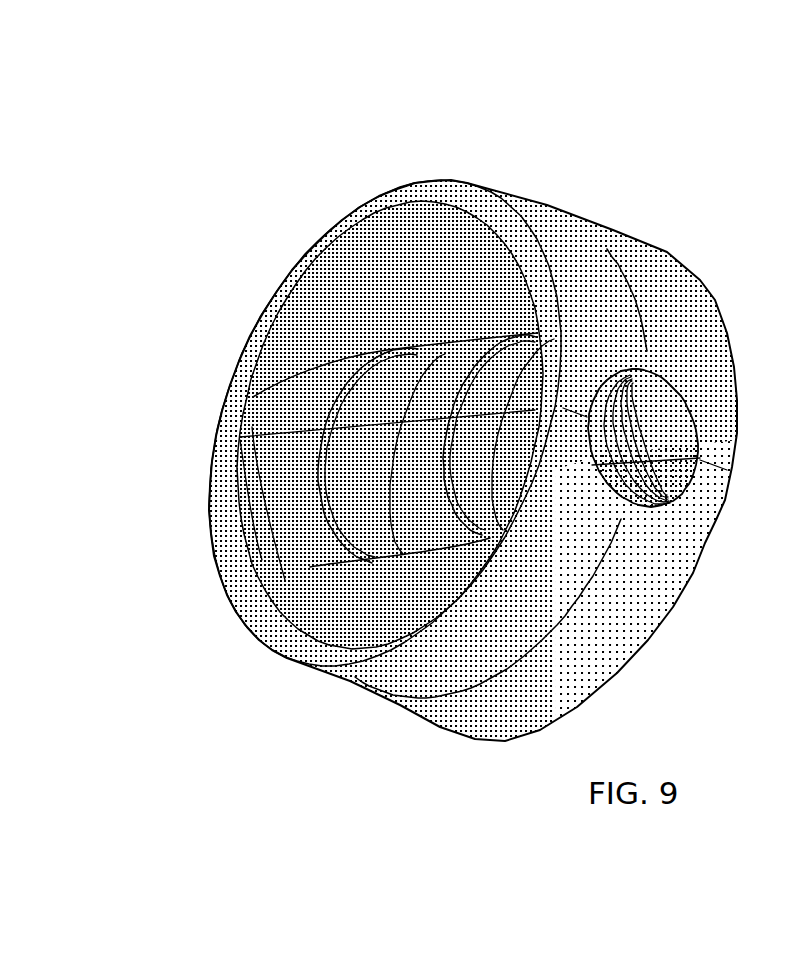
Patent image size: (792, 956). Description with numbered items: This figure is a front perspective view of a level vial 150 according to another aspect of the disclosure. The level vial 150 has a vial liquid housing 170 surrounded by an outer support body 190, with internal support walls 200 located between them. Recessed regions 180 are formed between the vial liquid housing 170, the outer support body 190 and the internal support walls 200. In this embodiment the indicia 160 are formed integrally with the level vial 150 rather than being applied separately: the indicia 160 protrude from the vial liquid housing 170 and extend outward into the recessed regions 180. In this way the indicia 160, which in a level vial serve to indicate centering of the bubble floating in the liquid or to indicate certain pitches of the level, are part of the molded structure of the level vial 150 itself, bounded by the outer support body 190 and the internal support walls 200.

The level vial 150 is at (726, 150).
The indicia 160 is at (397, 350).
The vial liquid housing 170 is at (377, 384).
The recessed regions 180 is at (458, 264).
The outer support body 190 is at (550, 206).
The internal support walls 200 is at (433, 305).